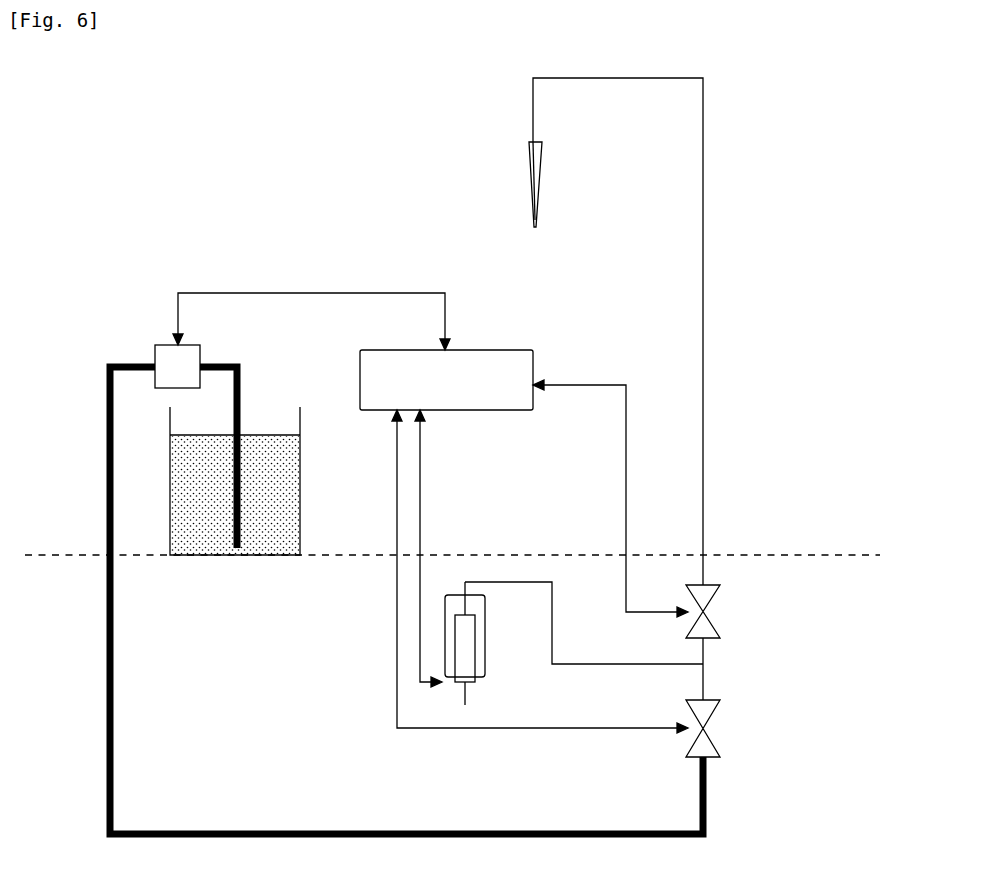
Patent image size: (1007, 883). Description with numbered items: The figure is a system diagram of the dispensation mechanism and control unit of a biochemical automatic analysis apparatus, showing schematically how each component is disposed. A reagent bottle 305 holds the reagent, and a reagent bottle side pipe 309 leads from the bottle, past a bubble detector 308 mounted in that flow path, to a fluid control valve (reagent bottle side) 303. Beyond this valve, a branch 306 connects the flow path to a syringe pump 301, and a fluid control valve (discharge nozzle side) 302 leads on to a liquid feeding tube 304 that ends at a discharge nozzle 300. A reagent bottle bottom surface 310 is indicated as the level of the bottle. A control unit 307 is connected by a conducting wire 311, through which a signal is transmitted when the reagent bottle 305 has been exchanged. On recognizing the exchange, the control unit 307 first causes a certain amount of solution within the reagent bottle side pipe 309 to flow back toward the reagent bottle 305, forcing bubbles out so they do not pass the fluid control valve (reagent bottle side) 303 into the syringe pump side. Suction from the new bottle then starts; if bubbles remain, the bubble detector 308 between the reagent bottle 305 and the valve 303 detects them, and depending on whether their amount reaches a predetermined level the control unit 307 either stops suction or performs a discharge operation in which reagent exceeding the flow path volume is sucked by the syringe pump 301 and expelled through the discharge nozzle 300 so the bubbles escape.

The discharge nozzle 300 is at (541, 180).
The syringe pump 301 is at (483, 665).
The fluid control valve (discharge nozzle side) 302 is at (715, 730).
The fluid control valve (reagent bottle side) 303 is at (713, 612).
The liquid feeding tube 304 is at (712, 398).
The reagent bottle 305 is at (262, 555).
The branch 306 is at (713, 664).
The control unit 307 is at (533, 352).
The bubble detector 308 is at (200, 352).
The reagent bottle side pipe 309 is at (210, 830).
The reagent bottle bottom surface 310 is at (790, 553).
The conducting wire 311 is at (333, 293).